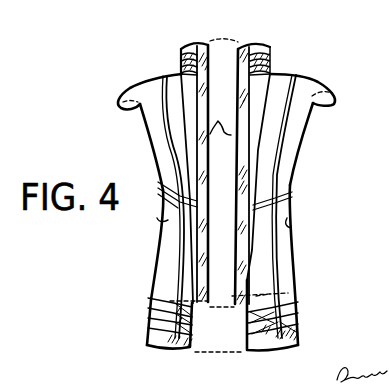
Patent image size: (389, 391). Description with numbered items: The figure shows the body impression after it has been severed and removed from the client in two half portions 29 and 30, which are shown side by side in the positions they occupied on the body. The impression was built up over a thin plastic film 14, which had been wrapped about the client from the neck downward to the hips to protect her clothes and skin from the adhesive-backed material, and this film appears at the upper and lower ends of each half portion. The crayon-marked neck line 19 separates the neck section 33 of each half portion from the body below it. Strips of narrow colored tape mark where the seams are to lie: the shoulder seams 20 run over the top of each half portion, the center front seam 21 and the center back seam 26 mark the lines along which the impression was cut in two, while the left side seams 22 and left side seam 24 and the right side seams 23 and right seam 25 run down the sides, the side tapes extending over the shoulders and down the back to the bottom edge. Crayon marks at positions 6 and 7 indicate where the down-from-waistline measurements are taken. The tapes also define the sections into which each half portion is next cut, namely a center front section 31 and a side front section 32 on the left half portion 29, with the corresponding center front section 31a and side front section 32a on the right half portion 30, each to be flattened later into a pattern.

The thin plastic film 14 is at (201, 44).
The neck section 33 is at (180, 61).
The neck line 19 is at (185, 77).
The shoulder seams 20 is at (153, 77).
The half portion 29 is at (159, 141).
The half portion 30 is at (296, 141).
The left side seams 22 is at (175, 175).
The left side seam 24 is at (155, 207).
The center front seam 21 is at (237, 162).
The right seam 25 is at (306, 166).
The center back seam 26 is at (221, 119).
The measurement position 6 is at (157, 218).
The side front section 32 is at (152, 243).
The side front section 32a is at (295, 205).
The center front section 31 is at (188, 241).
The center front section 31a is at (260, 259).
The measurement position 7 is at (158, 272).
The right side seams 23 is at (272, 297).